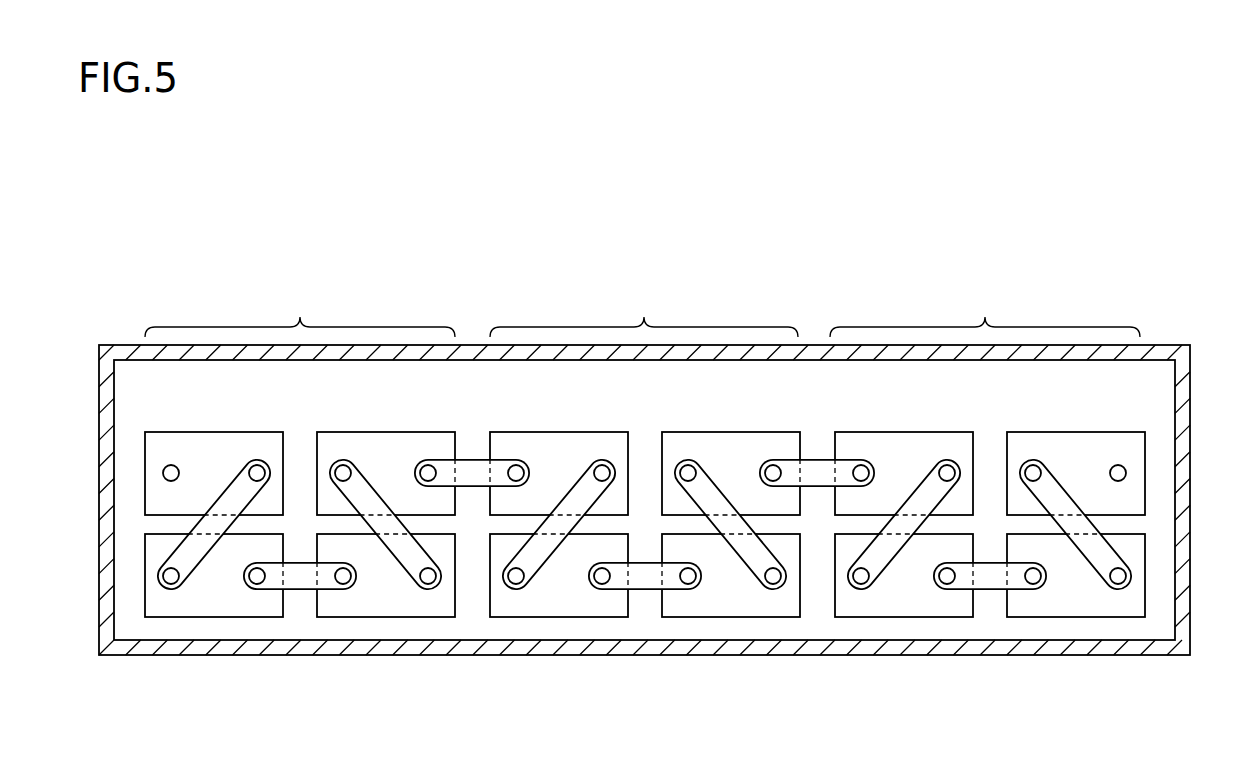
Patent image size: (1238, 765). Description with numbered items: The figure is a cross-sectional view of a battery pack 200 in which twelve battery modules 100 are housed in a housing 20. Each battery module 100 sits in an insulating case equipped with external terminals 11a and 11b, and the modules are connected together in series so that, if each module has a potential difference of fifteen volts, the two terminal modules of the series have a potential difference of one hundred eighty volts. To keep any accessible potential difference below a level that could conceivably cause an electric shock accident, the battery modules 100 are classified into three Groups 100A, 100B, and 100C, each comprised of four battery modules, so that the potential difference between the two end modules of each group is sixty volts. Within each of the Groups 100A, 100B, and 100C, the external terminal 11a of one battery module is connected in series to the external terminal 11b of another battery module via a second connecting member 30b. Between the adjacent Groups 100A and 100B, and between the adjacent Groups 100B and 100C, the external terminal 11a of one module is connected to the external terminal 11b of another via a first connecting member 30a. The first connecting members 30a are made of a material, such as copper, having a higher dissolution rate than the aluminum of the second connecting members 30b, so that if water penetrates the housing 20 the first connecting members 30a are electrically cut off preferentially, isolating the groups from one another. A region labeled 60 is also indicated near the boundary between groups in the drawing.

The battery pack 200 is at (644, 432).
The housing 20 is at (388, 655).
The gap between cell groups 60 is at (819, 377).
The battery module 100 is at (208, 448).
The Group 100A is at (300, 309).
The Group 100B is at (644, 309).
The Group 100C is at (985, 309).
The external terminal 11a is at (256, 464).
The external terminal 11b is at (170, 464).
The first connecting member 30a is at (473, 465).
The second connecting member 30b is at (300, 560).